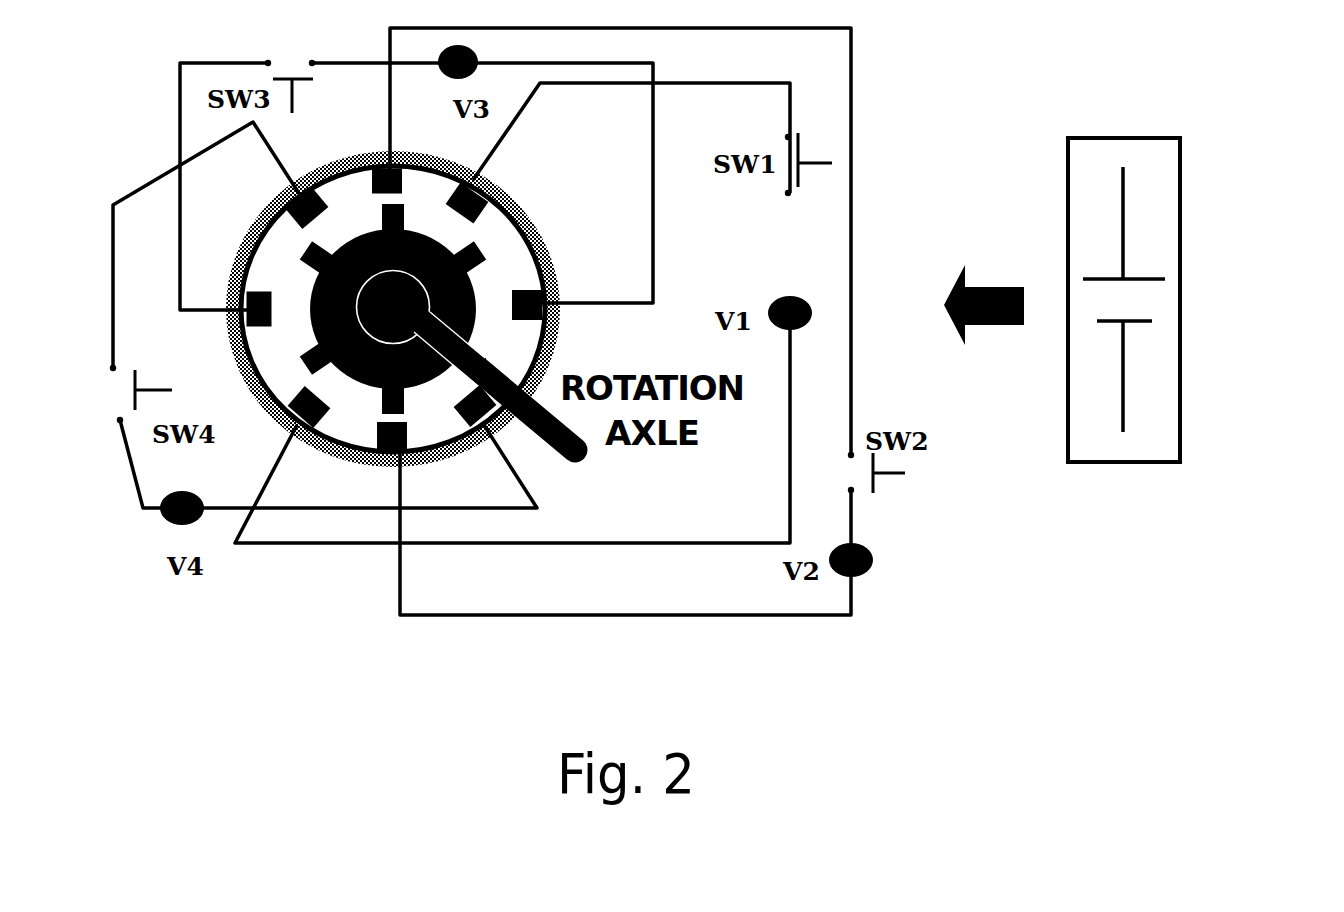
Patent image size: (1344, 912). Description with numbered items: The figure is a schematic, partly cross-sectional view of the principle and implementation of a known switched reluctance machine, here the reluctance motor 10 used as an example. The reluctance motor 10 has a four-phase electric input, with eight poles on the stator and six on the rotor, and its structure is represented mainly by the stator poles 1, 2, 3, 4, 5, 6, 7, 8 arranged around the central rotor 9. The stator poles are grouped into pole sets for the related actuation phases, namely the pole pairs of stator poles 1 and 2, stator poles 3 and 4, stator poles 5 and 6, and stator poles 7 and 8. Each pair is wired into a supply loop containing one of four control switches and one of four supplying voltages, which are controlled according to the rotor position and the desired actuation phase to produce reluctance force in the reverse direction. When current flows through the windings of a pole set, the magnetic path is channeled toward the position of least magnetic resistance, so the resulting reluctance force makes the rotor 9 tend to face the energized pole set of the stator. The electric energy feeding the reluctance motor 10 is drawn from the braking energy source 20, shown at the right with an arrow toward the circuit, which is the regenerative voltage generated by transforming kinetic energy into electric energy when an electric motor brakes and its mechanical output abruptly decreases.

The stator pole 1 is at (296, 423).
The stator pole 2 is at (487, 194).
The stator pole 3 is at (386, 158).
The stator pole 4 is at (388, 465).
The stator pole 5 is at (240, 305).
The stator pole 6 is at (548, 300).
The stator pole 7 is at (294, 204).
The stator pole 8 is at (479, 446).
The rotor 9 is at (370, 378).
The reluctance motor 10 is at (263, 222).
The braking energy source 20 is at (1180, 173).